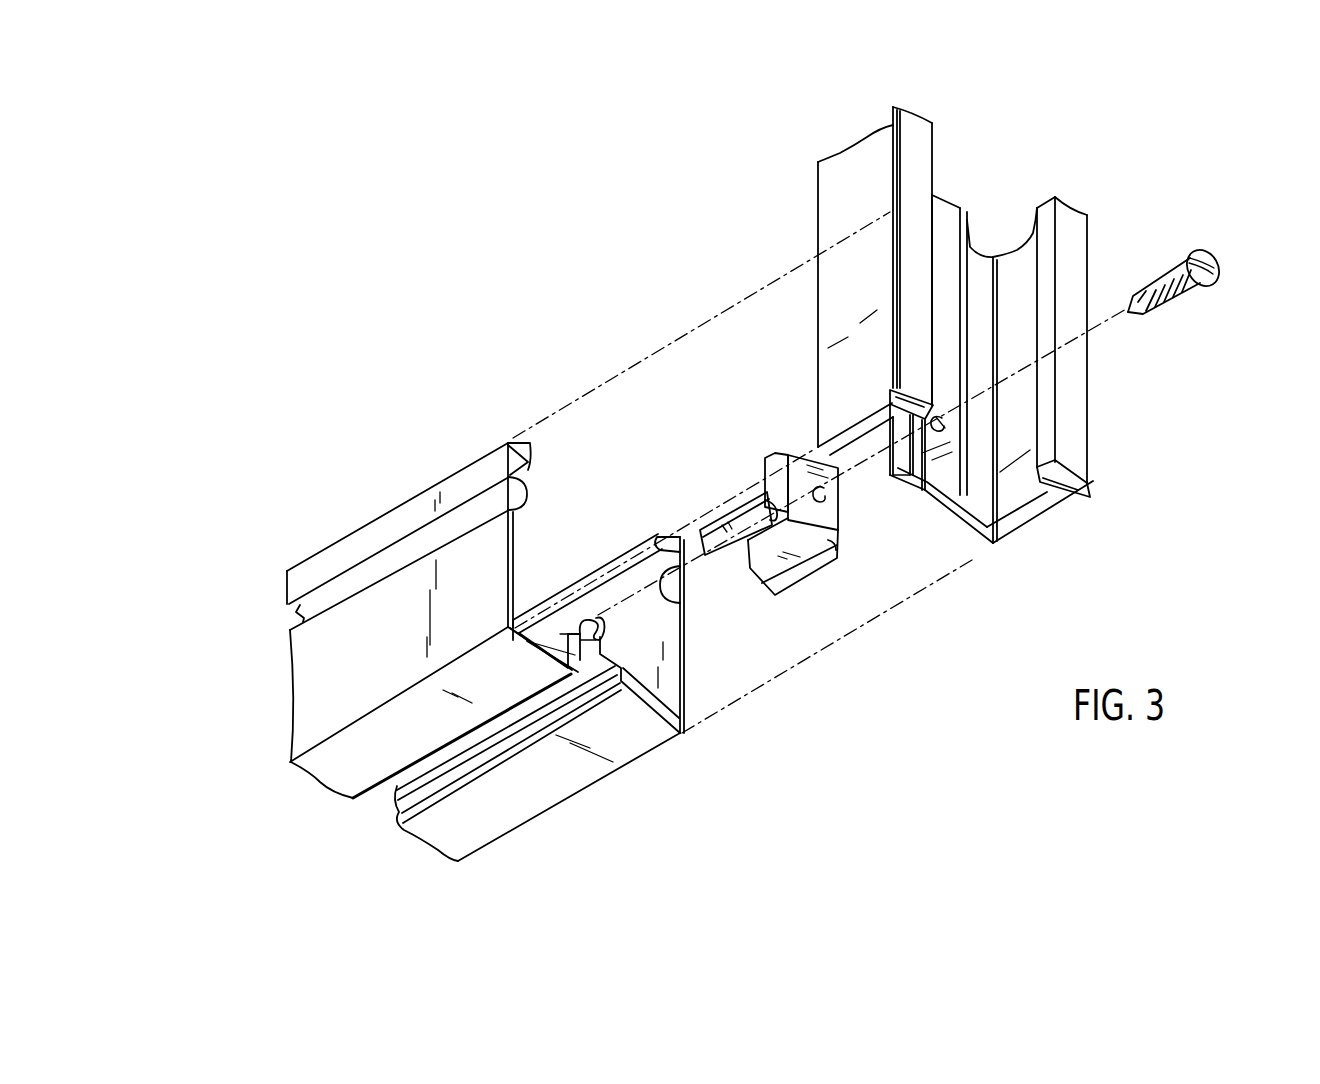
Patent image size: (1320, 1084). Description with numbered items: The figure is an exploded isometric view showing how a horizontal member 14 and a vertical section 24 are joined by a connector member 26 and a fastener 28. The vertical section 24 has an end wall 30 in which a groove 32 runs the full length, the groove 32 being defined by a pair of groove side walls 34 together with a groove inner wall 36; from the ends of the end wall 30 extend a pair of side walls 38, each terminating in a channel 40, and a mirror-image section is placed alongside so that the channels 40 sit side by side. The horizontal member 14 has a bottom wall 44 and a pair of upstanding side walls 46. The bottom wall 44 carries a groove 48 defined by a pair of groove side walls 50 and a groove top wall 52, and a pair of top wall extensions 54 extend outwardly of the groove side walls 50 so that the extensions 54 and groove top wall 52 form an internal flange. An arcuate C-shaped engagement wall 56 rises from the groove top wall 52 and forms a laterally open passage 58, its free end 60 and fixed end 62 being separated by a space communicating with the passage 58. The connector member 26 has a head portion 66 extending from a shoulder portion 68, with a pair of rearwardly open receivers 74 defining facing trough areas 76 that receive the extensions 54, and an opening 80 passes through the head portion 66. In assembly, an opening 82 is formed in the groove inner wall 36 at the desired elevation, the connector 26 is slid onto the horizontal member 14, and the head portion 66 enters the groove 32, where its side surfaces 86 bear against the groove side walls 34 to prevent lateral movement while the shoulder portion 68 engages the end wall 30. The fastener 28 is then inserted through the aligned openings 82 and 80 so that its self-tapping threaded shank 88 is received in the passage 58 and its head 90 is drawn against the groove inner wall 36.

The horizontal member 14 is at (290, 733).
The vertical section 24 is at (950, 335).
The connector member 26 is at (301, 608).
The fastener 28 is at (1188, 277).
The end wall 30 is at (977, 548).
The groove 32 is at (918, 486).
The groove side walls 34 is at (897, 480).
The groove inner wall 36 is at (912, 481).
The side walls 38 is at (824, 178).
The channel 40 is at (923, 113).
The bottom wall 44 is at (320, 783).
The side walls 46 is at (303, 672).
The groove 48 is at (388, 792).
The groove side walls 50 is at (626, 678).
The groove top wall 52 is at (577, 654).
The top wall extensions 54 is at (548, 631).
The C-shaped engagement wall 56 is at (595, 628).
The passage 58 is at (604, 624).
The free end 60 is at (583, 627).
The fixed end 62 is at (582, 630).
The head portion 66 is at (813, 428).
The shoulder portion 68 is at (770, 457).
The receivers 74 is at (738, 510).
The trough areas 76 is at (775, 500).
The opening 80 is at (826, 498).
The opening 82 is at (948, 428).
The side surfaces 86 is at (796, 456).
The threaded shank 88 is at (1150, 284).
The head 90 is at (1200, 251).